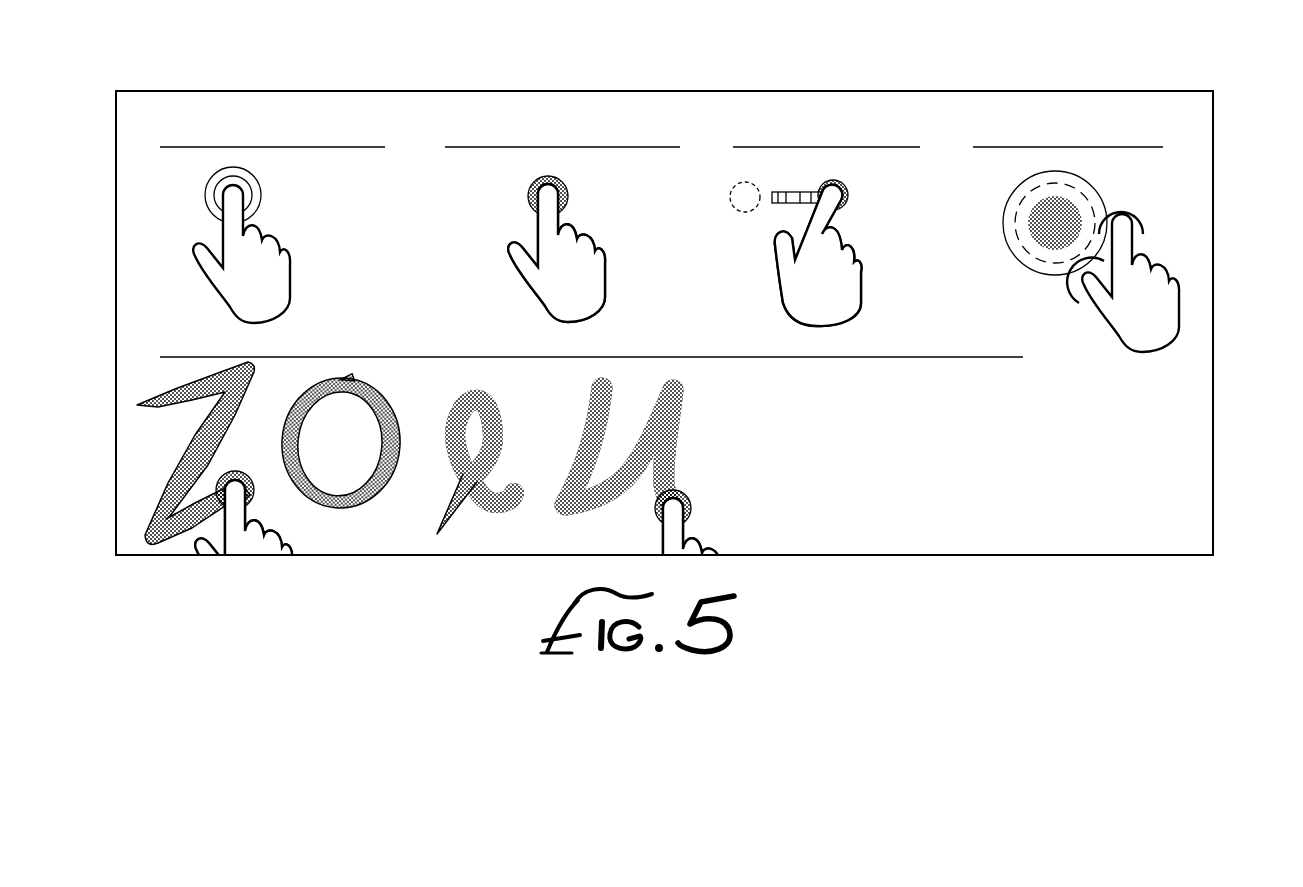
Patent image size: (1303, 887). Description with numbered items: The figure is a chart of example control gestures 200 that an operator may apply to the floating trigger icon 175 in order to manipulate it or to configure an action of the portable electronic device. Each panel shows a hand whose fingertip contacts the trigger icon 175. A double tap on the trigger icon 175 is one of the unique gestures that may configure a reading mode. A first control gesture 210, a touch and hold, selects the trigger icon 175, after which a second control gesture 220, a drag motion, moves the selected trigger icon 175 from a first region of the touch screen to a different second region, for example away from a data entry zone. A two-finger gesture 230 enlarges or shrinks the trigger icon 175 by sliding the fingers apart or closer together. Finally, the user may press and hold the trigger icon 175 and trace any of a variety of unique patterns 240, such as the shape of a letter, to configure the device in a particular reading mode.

The control gestures 200 is at (200, 68).
The floating trigger icon 175 is at (247, 183).
The first control gesture 210 is at (496, 223).
The second control gesture 220 is at (889, 239).
The two-finger gesture 230 is at (1178, 214).
The unique patterns 240 is at (143, 456).